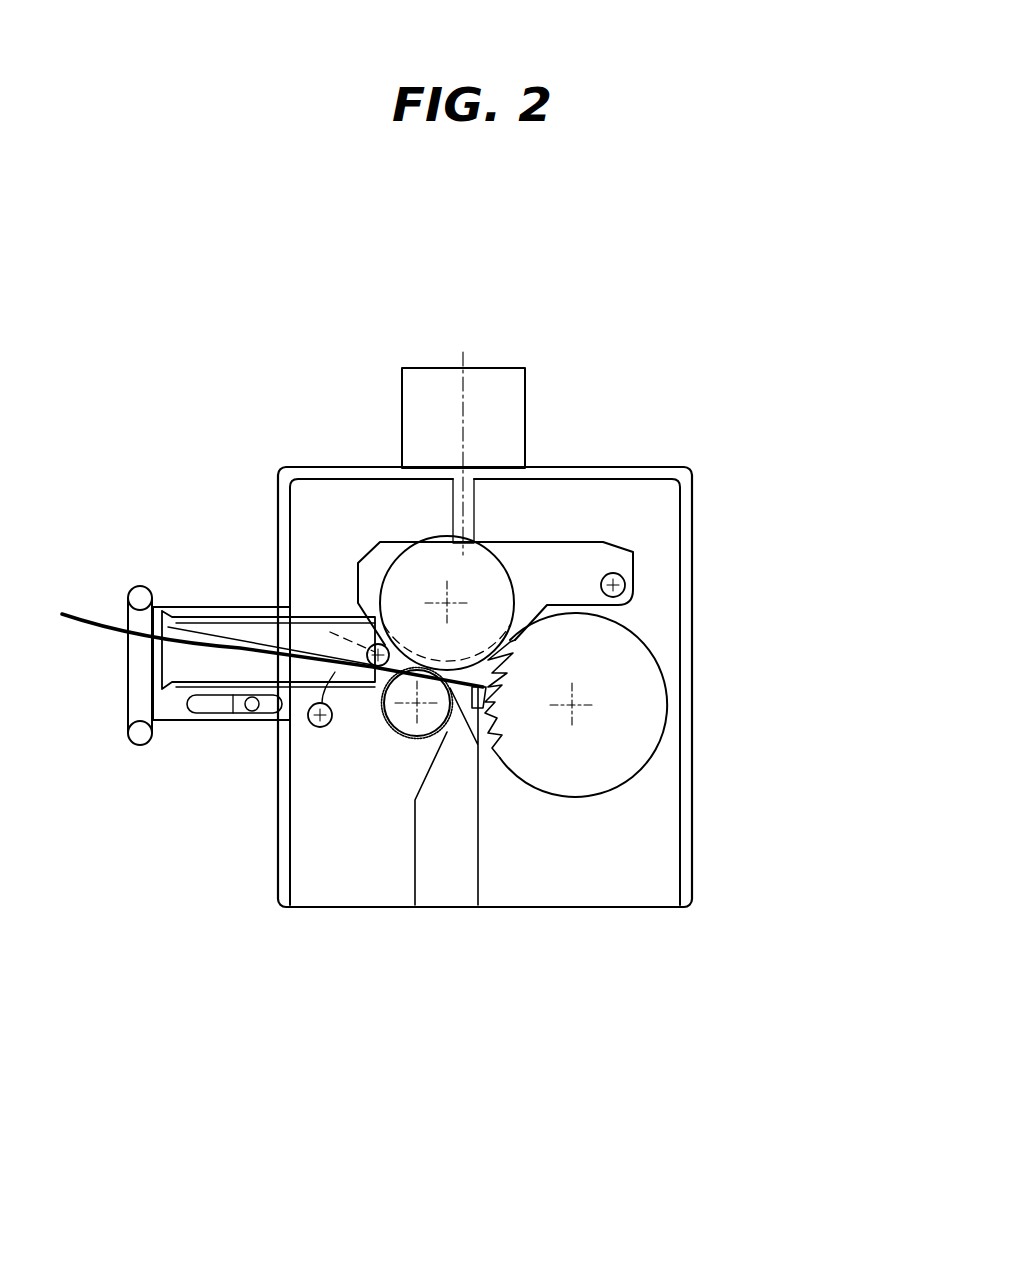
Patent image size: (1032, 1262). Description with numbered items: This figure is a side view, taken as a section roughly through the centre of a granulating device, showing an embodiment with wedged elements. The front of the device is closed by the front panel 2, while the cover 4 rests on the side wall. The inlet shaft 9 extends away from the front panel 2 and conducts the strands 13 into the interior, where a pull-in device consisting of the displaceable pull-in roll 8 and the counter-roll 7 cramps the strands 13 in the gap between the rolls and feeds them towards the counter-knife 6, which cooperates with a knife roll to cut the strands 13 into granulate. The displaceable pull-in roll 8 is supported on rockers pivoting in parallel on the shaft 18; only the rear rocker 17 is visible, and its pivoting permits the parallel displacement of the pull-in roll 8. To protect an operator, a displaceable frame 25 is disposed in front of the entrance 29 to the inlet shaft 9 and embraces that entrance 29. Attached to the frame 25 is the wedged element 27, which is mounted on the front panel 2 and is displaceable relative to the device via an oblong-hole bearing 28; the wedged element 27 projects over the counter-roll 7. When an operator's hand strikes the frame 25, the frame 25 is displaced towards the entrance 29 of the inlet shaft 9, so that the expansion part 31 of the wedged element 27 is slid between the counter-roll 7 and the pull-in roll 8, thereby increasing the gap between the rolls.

The front panel 2 is at (288, 847).
The cover 4 is at (608, 477).
The counter-knife 6 is at (463, 723).
The counter-roll 7 is at (408, 715).
The pull-in roll 8 is at (477, 587).
The inlet shaft 9 is at (263, 635).
The strands 13 is at (197, 640).
The rocker 17 is at (568, 570).
The shaft 18 is at (623, 580).
The frame 25 is at (137, 697).
The wedged element 27 is at (170, 707).
The oblong-hole bearing 28 is at (252, 713).
The entrance 29 is at (162, 655).
The expansion part 31 is at (378, 643).